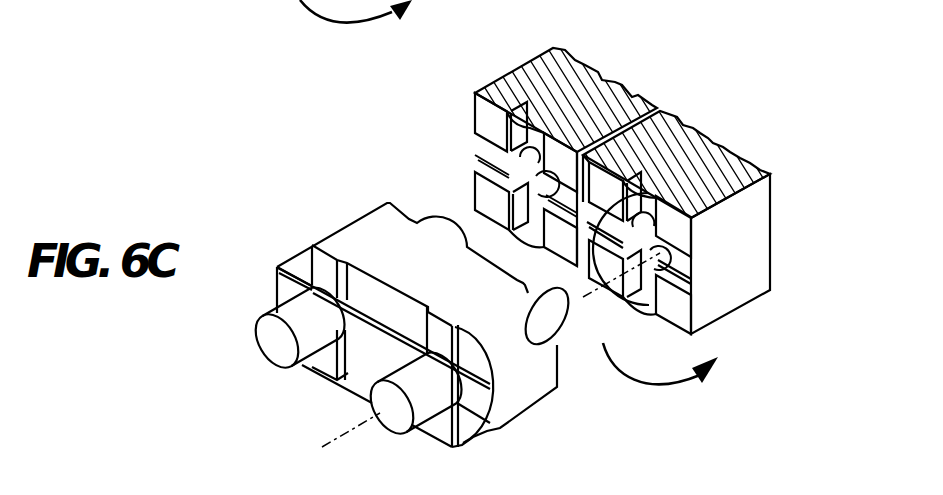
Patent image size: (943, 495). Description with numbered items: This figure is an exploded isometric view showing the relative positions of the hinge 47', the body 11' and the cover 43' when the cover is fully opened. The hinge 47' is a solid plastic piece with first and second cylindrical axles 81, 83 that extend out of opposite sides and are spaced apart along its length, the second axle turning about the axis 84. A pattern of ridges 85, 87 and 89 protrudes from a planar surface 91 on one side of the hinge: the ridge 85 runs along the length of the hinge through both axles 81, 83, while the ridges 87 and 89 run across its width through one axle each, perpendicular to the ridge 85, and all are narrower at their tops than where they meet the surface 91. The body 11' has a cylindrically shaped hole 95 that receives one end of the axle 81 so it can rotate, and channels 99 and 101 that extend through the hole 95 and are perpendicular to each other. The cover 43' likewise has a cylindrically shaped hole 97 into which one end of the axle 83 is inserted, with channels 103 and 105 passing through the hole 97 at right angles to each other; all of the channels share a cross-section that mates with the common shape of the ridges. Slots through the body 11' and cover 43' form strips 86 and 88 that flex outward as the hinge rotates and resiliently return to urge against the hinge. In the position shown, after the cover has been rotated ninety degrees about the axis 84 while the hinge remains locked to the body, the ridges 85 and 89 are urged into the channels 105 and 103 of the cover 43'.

The body 11' is at (654, 14).
The cover 43' is at (609, 191).
The hinge 47' is at (397, 318).
The first cylindrical axle 81 is at (279, 312).
The second cylindrical axle 83 is at (387, 397).
The axis 84 is at (340, 441).
The ridge 85 is at (365, 338).
The strip 86 is at (640, 118).
The ridge 87 is at (322, 267).
The strip 88 is at (742, 236).
The ridge 89 is at (437, 428).
The planar surface 91 is at (382, 292).
The cylindrically shaped hole 95 is at (517, 183).
The cylindrically shaped hole 97 is at (660, 258).
The channel 99 is at (530, 128).
The channel 101 is at (491, 150).
The channel 103 is at (644, 195).
The channel 105 is at (700, 322).